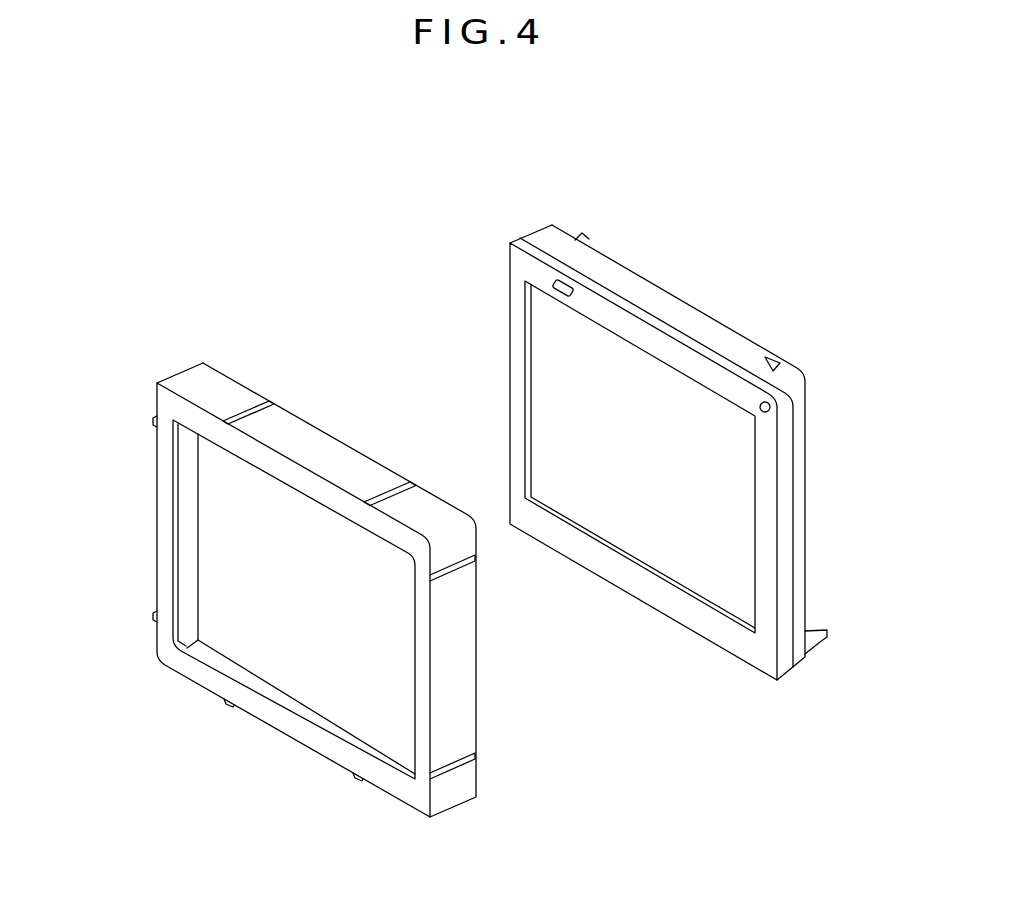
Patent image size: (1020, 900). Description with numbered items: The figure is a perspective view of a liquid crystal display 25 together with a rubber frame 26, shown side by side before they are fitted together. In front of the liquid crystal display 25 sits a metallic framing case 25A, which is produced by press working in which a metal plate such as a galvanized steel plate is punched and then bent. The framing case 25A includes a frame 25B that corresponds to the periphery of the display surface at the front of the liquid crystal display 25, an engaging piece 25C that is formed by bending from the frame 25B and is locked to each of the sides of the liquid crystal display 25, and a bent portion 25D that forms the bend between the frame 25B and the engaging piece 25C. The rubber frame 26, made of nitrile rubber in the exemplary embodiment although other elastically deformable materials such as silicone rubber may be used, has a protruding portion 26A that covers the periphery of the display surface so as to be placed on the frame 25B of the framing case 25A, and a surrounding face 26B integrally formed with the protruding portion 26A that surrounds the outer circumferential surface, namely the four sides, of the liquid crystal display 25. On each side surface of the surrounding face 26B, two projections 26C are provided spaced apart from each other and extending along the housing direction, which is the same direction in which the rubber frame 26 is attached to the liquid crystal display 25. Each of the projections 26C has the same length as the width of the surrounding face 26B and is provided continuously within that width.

The liquid crystal display 25 is at (668, 230).
The framing case 25A is at (656, 350).
The frame 25B is at (526, 409).
The engaging piece 25C is at (702, 348).
The bent portion 25D is at (508, 358).
The rubber frame 26 is at (320, 340).
The protruding portion 26A is at (298, 482).
The surrounding face 26B is at (332, 453).
The projections 26C is at (250, 404).